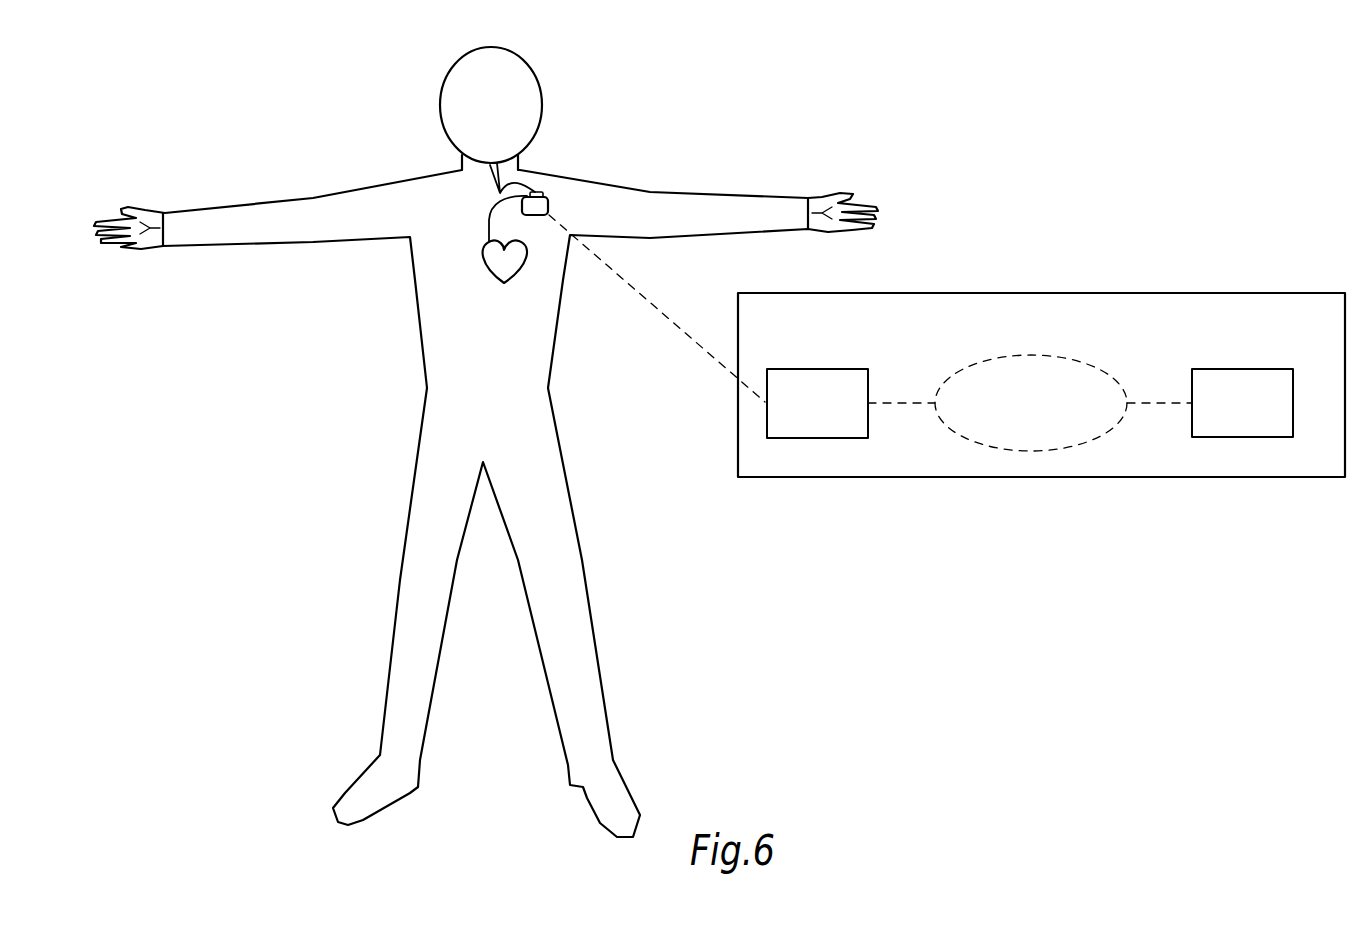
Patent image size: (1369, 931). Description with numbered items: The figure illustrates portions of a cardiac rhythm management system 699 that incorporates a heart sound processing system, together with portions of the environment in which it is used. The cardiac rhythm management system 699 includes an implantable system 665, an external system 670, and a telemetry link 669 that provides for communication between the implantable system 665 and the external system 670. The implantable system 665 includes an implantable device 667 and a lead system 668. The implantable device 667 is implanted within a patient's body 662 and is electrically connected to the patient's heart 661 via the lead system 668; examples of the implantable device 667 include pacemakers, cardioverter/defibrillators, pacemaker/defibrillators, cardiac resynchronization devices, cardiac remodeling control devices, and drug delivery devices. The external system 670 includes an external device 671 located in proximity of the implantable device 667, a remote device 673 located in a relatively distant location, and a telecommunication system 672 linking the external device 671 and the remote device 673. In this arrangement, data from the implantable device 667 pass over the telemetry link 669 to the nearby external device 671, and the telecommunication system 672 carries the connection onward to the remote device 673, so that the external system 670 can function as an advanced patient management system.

The heart 661 is at (488, 272).
The patient's body 662 is at (418, 348).
The implantable system 665 is at (497, 165).
The implantable device 667 is at (548, 208).
The lead system 668 is at (487, 213).
The telemetry link 669 is at (656, 309).
The external system 670 is at (1252, 296).
The external device 671 is at (850, 368).
The telecommunication system 672 is at (1065, 356).
The remote device 673 is at (1277, 368).
The cardiac rhythm management system 699 is at (880, 465).